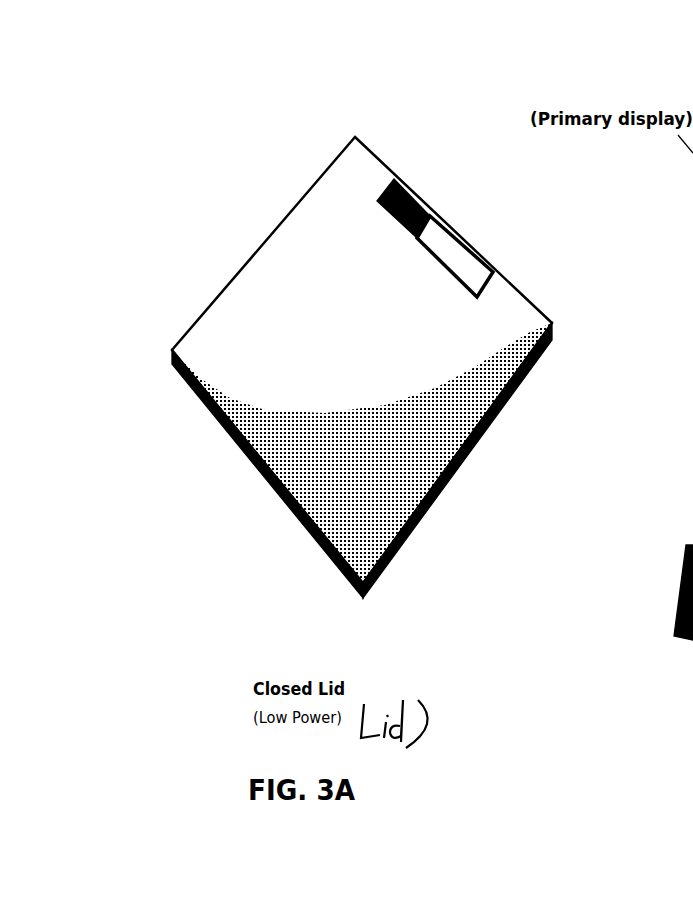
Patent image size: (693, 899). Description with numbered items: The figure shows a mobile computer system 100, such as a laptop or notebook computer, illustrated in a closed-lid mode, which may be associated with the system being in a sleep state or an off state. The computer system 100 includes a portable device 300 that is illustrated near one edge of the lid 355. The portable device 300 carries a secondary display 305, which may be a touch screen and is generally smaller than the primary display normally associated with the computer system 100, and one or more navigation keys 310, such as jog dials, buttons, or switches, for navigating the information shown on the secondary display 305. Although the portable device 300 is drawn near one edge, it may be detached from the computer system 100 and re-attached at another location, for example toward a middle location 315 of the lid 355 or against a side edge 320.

The computer system 100 is at (204, 242).
The portable device 300 is at (489, 257).
The secondary display 305 is at (453, 254).
The navigation keys 310 is at (412, 192).
The middle location 315 is at (349, 378).
The side edge 320 is at (471, 461).
The lid 355 is at (692, 82).